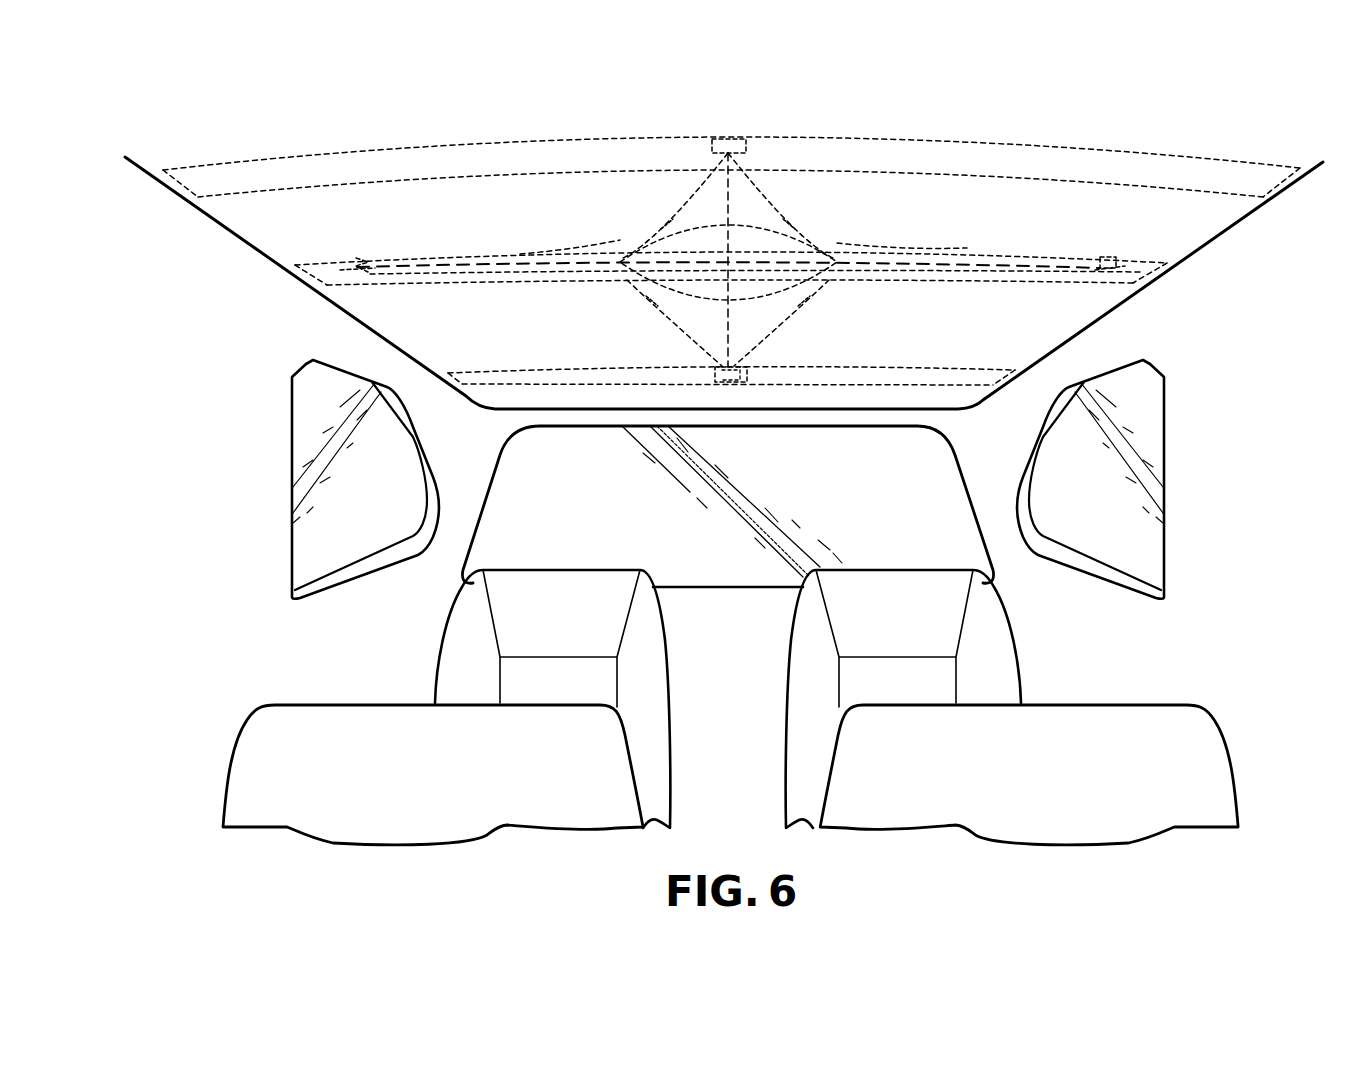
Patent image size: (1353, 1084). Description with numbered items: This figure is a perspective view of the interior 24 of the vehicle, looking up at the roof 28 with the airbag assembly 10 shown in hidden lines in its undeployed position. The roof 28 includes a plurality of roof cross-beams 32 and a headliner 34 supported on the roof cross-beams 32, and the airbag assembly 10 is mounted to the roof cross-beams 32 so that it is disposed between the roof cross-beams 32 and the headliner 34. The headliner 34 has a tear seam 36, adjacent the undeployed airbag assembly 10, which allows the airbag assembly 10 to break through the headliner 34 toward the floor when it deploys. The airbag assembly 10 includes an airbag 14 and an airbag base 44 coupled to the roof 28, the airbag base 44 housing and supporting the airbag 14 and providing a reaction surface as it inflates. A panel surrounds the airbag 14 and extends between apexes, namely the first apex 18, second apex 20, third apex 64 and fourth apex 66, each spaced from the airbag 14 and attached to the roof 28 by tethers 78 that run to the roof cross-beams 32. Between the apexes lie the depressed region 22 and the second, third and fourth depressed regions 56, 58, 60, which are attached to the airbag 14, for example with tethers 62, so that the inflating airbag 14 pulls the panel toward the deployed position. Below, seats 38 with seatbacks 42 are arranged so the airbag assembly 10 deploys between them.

The airbag assembly 10 is at (727, 259).
The airbag 14 is at (745, 217).
The first apex 18 is at (1117, 265).
The second apex 20 is at (733, 148).
The depressed region 22 is at (800, 230).
The interior 24 is at (255, 388).
The roof 28 is at (215, 243).
The roof cross-beams 32 is at (228, 162).
The headliner 34 is at (922, 313).
The tear seam 36 is at (935, 255).
The seats 38 is at (668, 627).
The seatback 42 is at (672, 705).
The airbag base 44 is at (600, 237).
The second depressed region 56 is at (808, 303).
The third depressed region 58 is at (658, 303).
The fourth depressed region 60 is at (625, 250).
The tethers 62 is at (670, 228).
The third apex 64 is at (357, 275).
The fourth apex 66 is at (738, 378).
The tethers 78 is at (712, 146).